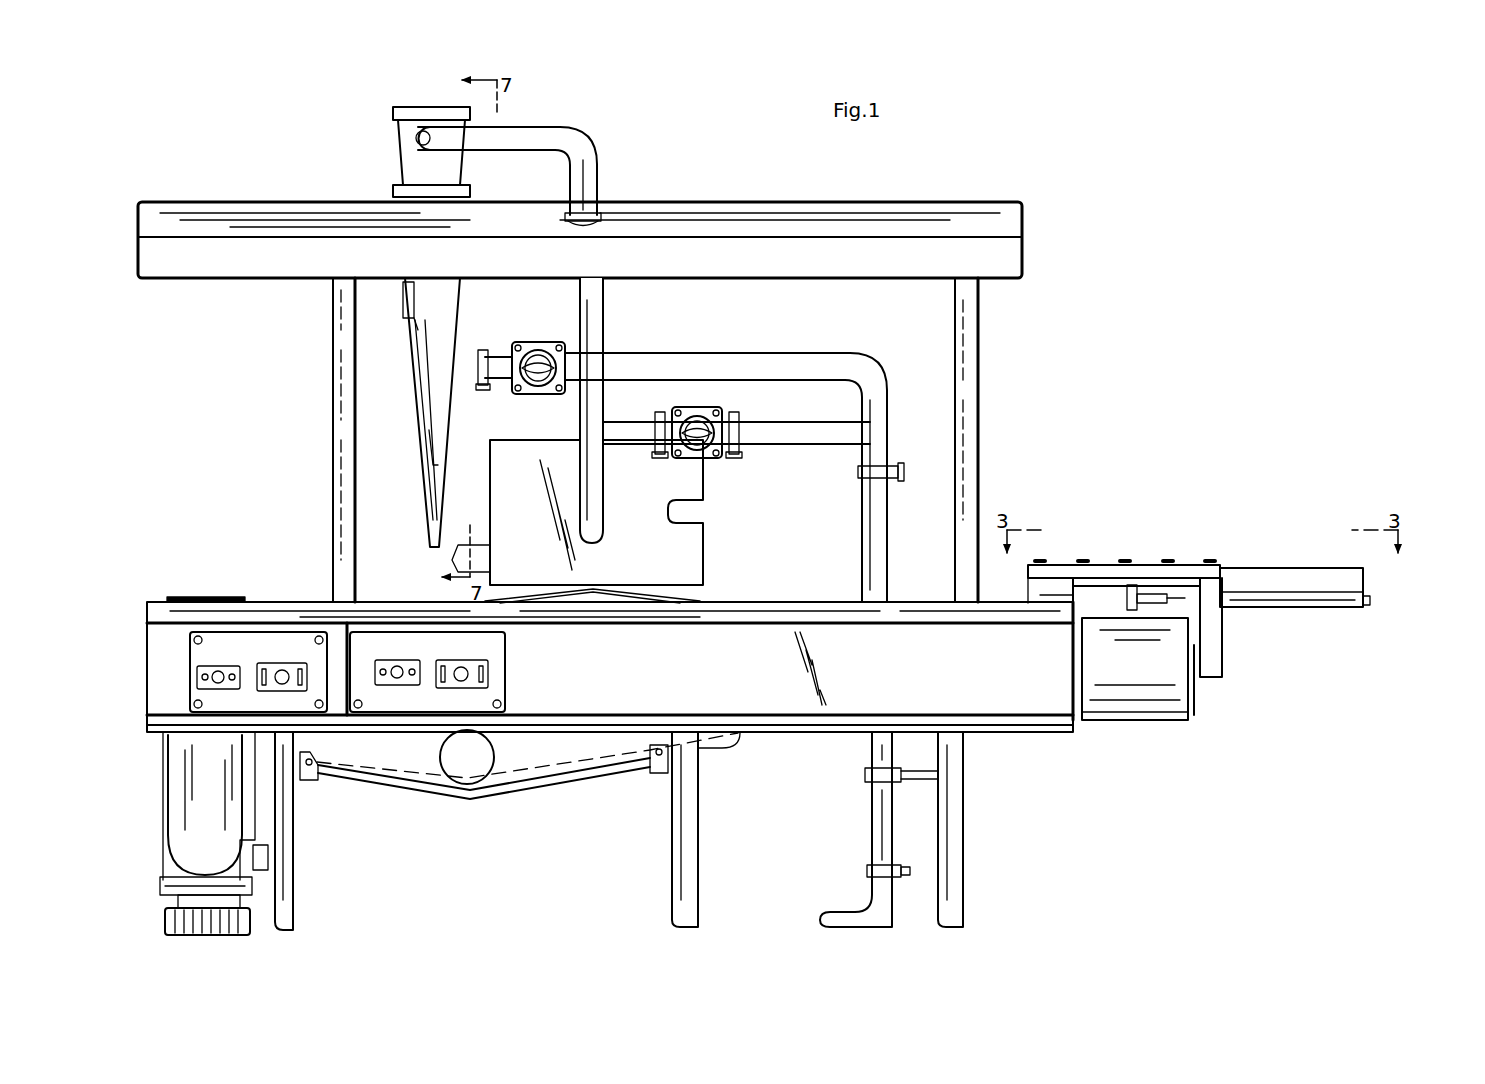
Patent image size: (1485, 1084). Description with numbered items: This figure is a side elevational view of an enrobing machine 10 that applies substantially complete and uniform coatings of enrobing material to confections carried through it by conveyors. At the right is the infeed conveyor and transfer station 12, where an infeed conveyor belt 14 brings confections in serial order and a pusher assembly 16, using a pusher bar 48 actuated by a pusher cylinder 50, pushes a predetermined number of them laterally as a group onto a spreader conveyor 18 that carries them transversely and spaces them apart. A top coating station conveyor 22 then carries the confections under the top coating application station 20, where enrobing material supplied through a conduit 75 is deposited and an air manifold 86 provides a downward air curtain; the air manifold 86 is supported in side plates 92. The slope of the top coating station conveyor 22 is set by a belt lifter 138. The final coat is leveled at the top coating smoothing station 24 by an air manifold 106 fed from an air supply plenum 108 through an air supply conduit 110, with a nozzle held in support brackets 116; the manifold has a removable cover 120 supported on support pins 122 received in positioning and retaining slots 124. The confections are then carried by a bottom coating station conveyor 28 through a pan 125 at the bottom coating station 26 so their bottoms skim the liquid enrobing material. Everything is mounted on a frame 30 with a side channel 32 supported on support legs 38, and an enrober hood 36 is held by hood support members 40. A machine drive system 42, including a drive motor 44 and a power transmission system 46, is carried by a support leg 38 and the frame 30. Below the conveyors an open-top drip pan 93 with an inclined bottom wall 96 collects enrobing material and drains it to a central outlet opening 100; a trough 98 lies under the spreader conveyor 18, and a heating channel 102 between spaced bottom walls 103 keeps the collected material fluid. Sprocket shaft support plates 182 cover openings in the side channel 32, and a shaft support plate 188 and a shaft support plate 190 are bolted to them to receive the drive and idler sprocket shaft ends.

The machine 10 is at (1152, 328).
The infeed conveyor and transfer station 12 is at (1218, 707).
The infeed conveyor belt 14 is at (1150, 712).
The pusher assembly 16 is at (1392, 598).
The spreader conveyor 18 is at (916, 600).
The top coating application station 20 is at (723, 534).
The top coating station conveyor 22 is at (688, 597).
The top coating smoothing station 24 is at (412, 550).
The bottom coating station 26 is at (205, 520).
The bottom coating station conveyor 28 is at (290, 600).
The frame 30 is at (1026, 840).
The side channel 32 is at (1030, 705).
The enrober hood 36 is at (1022, 222).
The support legs 38 is at (295, 905).
The hood support members 40 is at (333, 331).
The machine drive system 42 is at (146, 800).
The drive motor 44 is at (190, 935).
The power transmission system 46 is at (178, 848).
The pusher bar 48 is at (1130, 598).
The pusher cylinder 50 is at (1270, 612).
The conduit 75 is at (890, 508).
The air manifold 86 is at (603, 537).
The side plates 92 is at (543, 440).
The drip pan 93 is at (562, 802).
The inclined bottom wall 96 is at (374, 770).
The trough 98 is at (562, 768).
The central outlet opening 100 is at (440, 779).
The heating channel 102 is at (620, 770).
The spaced bottom walls 103 is at (505, 808).
The air manifold 106 is at (452, 292).
The air supply plenum 108 is at (455, 172).
The air supply conduit 110 is at (603, 300).
The support brackets 116 is at (483, 557).
The removable cover 120 is at (414, 378).
The support pins 122 is at (412, 318).
The positioning and retaining slots 124 is at (420, 328).
The pan 125 is at (170, 597).
The belt lifter 138 is at (595, 595).
The sprocket shaft support plates 182 is at (197, 696).
The shaft support plate 188 is at (226, 668).
The shaft support plate 190 is at (285, 660).